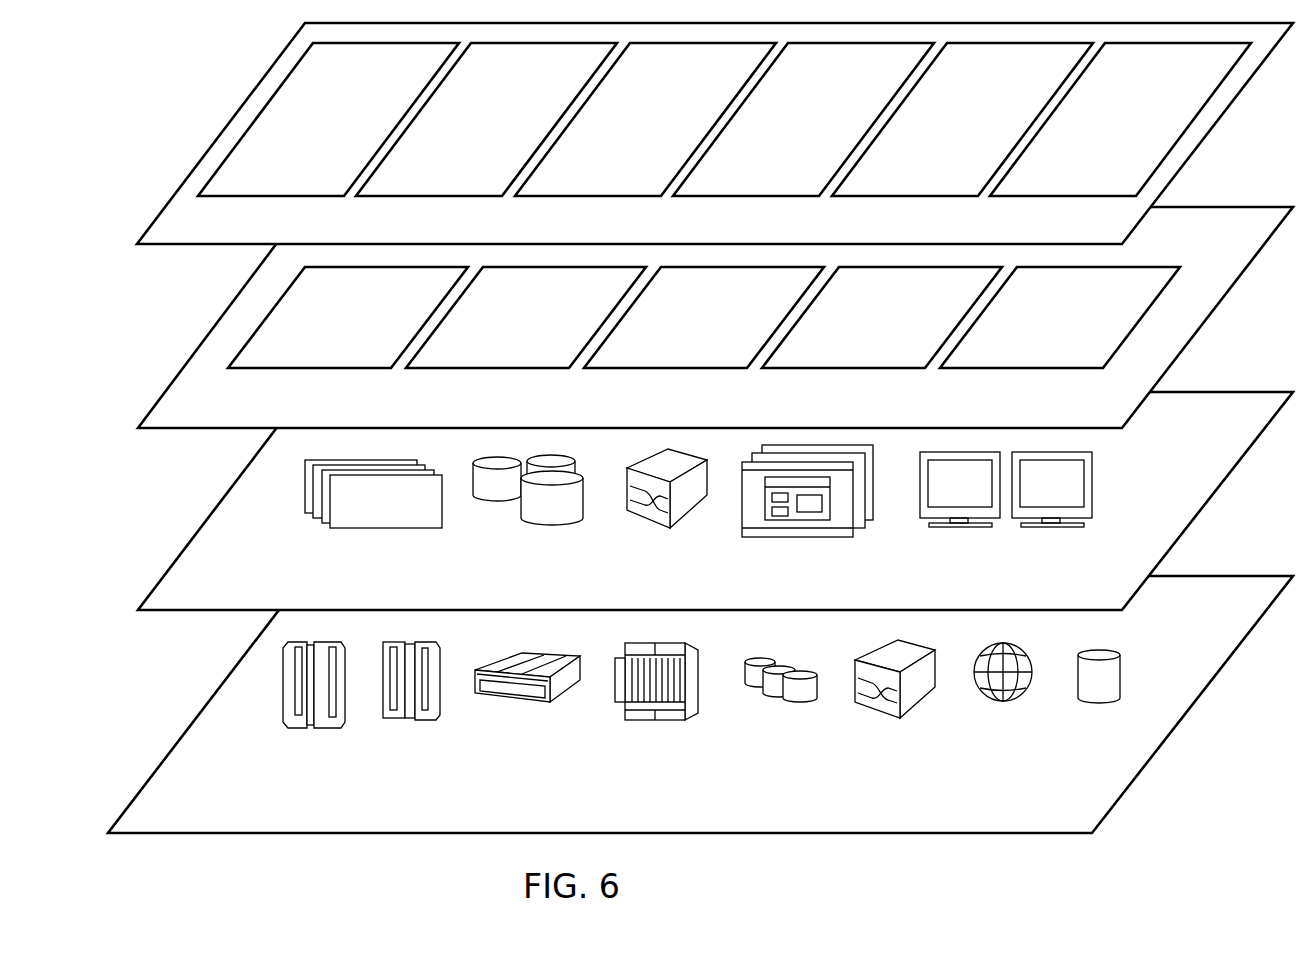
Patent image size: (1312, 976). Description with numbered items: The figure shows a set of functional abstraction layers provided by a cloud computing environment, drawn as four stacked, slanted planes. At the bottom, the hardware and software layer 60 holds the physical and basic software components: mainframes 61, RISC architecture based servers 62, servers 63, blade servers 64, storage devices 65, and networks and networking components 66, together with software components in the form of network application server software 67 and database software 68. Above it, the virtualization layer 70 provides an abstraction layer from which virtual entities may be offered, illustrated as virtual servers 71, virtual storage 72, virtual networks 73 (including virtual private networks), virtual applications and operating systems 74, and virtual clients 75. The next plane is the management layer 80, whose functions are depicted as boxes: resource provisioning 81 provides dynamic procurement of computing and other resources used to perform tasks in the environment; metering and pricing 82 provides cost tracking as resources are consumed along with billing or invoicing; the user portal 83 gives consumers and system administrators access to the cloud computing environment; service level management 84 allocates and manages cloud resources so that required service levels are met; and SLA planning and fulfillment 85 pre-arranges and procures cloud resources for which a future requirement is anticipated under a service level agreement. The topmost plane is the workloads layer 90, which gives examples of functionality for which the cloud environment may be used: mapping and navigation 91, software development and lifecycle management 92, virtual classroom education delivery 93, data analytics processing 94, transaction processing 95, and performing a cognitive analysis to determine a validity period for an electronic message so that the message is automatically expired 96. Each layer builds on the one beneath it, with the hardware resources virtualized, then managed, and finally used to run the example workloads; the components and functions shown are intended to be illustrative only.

The hardware and software layer 60 is at (197, 834).
The mainframes 61 is at (328, 728).
The RISC architecture based servers 62 is at (423, 722).
The servers 63 is at (530, 702).
The blade servers 64 is at (645, 720).
The storage devices 65 is at (802, 698).
The networks and networking components 66 is at (895, 713).
The network application server software 67 is at (1005, 700).
The database software 68 is at (1103, 698).
The virtualization layer 70 is at (195, 612).
The virtual servers 71 is at (380, 528).
The virtual storage 72 is at (548, 518).
The virtual networks 73 is at (652, 522).
The virtual applications and operating systems 74 is at (818, 537).
The virtual clients 75 is at (980, 527).
The management layer 80 is at (195, 429).
The resource provisioning 81 is at (332, 328).
The metering and pricing 82 is at (510, 328).
The user portal 83 is at (688, 328).
The service level management 84 is at (866, 328).
The Service Level Agreement (SLA) planning and fulfillment 85 is at (1044, 328).
The workloads layer 90 is at (195, 245).
The mapping and navigation 91 is at (315, 132).
The software development and lifecycle management 92 is at (473, 132).
The virtual classroom education delivery 93 is at (631, 132).
The data analytics processing 94 is at (789, 132).
The transaction processing 95 is at (948, 132).
The cognitive analysis to determine a validity period for an electronic message 96 is at (1106, 132).